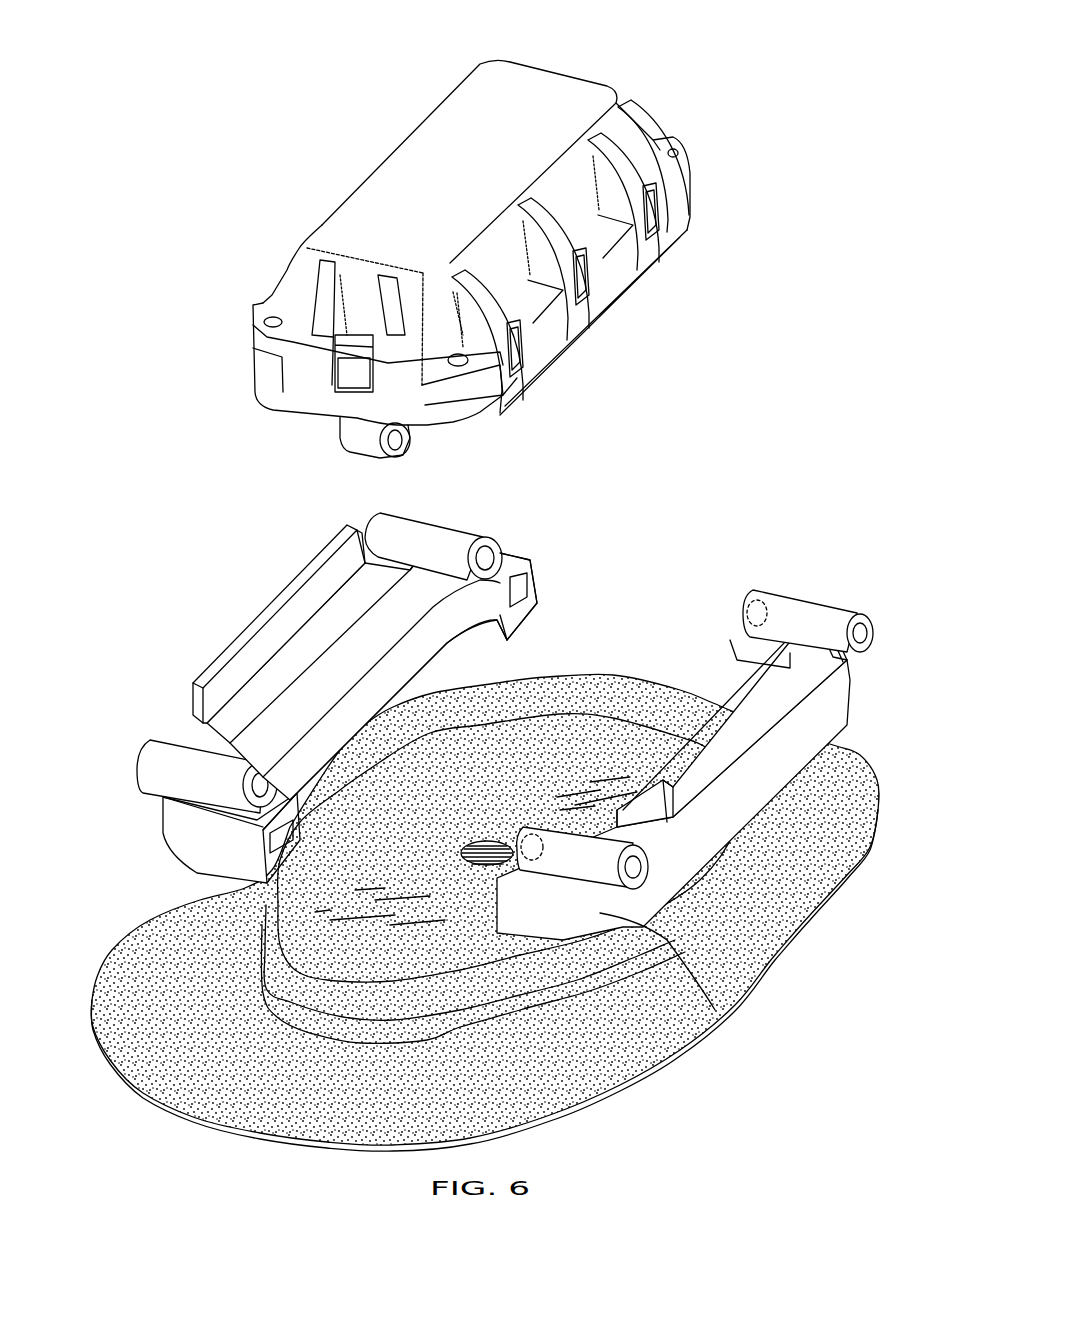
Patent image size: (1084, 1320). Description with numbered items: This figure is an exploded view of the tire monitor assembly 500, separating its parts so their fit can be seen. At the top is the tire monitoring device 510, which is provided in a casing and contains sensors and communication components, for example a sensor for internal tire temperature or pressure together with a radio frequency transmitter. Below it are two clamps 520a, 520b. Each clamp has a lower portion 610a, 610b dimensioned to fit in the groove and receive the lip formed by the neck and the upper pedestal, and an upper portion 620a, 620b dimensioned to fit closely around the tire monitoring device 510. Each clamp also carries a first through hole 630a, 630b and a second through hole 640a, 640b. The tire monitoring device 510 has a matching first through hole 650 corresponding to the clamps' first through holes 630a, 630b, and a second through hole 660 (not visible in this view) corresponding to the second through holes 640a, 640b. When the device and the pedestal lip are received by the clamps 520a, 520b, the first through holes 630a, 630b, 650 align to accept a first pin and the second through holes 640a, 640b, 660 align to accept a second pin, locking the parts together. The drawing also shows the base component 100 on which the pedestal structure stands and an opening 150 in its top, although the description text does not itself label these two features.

The base pad 100 is at (543, 1088).
The threaded hole 150 is at (487, 840).
The tire monitor assembly 500 is at (408, 257).
The tire monitoring device 510 is at (545, 90).
The clamp 520a is at (685, 770).
The clamp 520b is at (345, 698).
The lower portion 610a is at (715, 1010).
The lower portion 610b is at (193, 843).
The upper portion 620a is at (713, 715).
The upper portion 620b is at (203, 670).
The first through hole 630a is at (535, 838).
The first through hole 630b is at (253, 790).
The second through hole 640a is at (743, 610).
The second through hole 640b is at (487, 558).
The first through hole 650 is at (398, 440).
The second through hole 660 is at (650, 103).